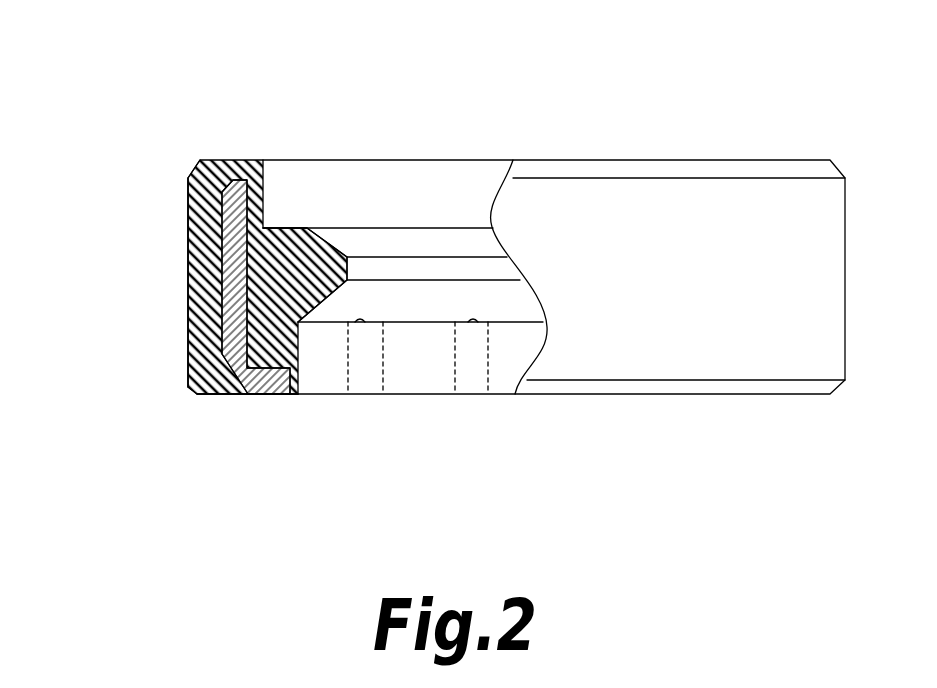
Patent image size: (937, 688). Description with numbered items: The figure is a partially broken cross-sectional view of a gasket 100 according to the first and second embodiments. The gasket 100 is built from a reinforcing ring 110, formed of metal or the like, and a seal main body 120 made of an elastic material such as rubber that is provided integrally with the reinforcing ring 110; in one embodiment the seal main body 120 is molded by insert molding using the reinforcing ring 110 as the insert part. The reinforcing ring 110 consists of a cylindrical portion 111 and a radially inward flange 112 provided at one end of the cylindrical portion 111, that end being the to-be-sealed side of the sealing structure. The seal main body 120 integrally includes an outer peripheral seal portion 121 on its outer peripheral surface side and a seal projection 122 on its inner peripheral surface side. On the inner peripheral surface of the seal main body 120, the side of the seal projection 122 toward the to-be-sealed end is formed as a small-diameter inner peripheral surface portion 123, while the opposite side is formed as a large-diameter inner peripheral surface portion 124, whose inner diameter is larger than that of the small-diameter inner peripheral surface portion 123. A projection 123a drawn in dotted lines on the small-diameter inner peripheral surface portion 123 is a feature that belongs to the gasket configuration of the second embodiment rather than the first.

The gasket 100 is at (710, 112).
The reinforcing ring 110 is at (213, 287).
The cylindrical portion 111 is at (188, 237).
The radially inward flange 112 is at (283, 395).
The seal main body 120 is at (167, 160).
The outer peripheral seal portion 121 is at (195, 208).
The seal projection 122 is at (342, 248).
The small-diameter inner peripheral surface portion 123 is at (424, 363).
The projection 123a is at (362, 367).
The large-diameter inner peripheral surface portion 124 is at (472, 192).